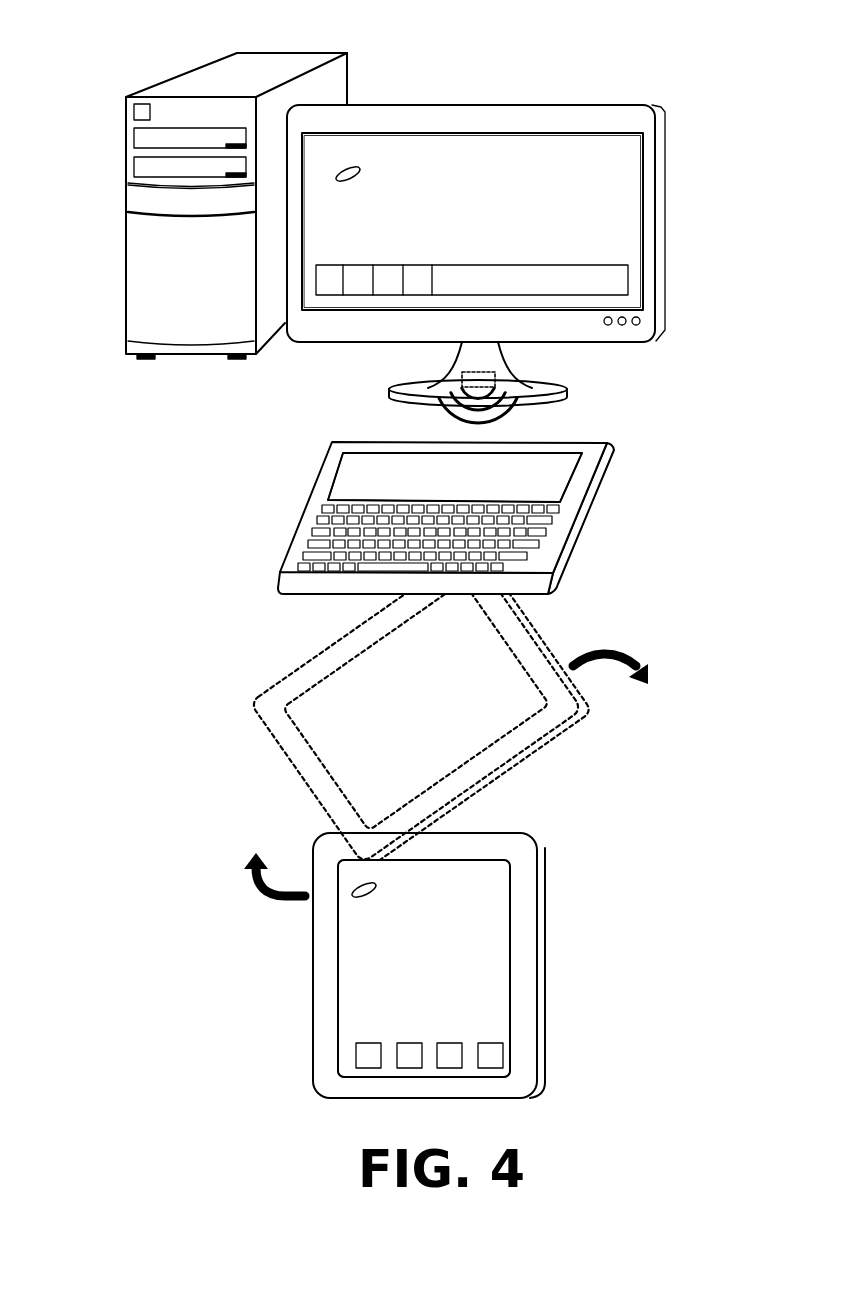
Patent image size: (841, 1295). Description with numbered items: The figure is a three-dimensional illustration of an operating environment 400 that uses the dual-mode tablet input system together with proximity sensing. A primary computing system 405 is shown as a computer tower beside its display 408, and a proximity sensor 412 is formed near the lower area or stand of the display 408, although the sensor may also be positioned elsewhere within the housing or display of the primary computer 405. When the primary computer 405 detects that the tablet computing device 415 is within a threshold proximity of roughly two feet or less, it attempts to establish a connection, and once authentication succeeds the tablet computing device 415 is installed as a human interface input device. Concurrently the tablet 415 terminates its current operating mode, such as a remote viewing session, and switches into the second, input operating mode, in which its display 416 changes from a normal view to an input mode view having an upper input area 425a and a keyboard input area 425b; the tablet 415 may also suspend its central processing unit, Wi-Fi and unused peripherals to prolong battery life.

The operating environment 400 is at (105, 36).
The primary computing system 405 is at (342, 72).
The display 408 is at (664, 198).
The proximity sensor 412 is at (462, 378).
The tablet computing device 415 is at (601, 457).
The touch screen display 416 is at (497, 933).
The first display region 425a is at (348, 473).
The keyboard display region 425b is at (454, 509).